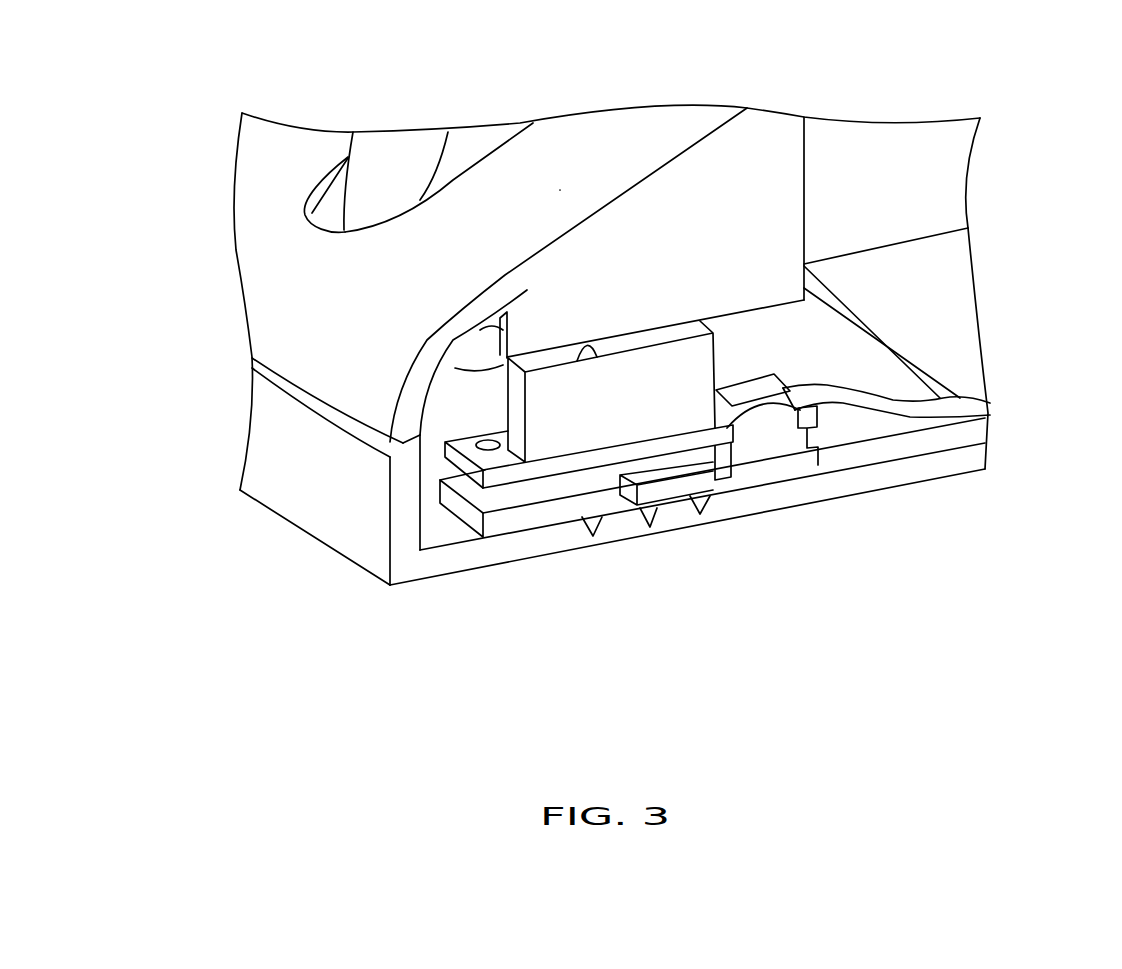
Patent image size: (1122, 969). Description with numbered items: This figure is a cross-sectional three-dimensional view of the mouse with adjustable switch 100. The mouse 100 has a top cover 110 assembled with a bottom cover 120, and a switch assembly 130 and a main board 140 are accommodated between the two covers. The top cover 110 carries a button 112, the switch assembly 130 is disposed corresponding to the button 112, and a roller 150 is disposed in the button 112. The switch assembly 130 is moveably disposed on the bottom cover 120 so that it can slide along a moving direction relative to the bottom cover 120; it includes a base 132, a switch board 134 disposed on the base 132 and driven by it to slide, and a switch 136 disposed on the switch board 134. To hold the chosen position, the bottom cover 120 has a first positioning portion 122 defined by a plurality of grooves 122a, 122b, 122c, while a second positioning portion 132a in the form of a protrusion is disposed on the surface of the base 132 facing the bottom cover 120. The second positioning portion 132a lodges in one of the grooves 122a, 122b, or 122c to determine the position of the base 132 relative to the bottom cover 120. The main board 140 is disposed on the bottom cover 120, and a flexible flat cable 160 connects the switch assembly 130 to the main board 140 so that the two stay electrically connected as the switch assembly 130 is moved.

The mouse with adjustable switch 100 is at (973, 687).
The top cover 110 is at (277, 320).
The button 112 is at (572, 157).
The bottom cover 120 is at (437, 567).
The first positioning portion 122 is at (712, 585).
The groove 122a is at (585, 527).
The groove 122b is at (640, 510).
The groove 122c is at (690, 504).
The switch assembly 130 is at (663, 487).
The base 132 is at (663, 479).
The second positioning portion 132a is at (645, 500).
The switch board 134 is at (797, 458).
The switch 136 is at (697, 418).
The main board 140 is at (958, 300).
The roller 150 is at (393, 157).
The flexible flat cable 160 is at (930, 408).